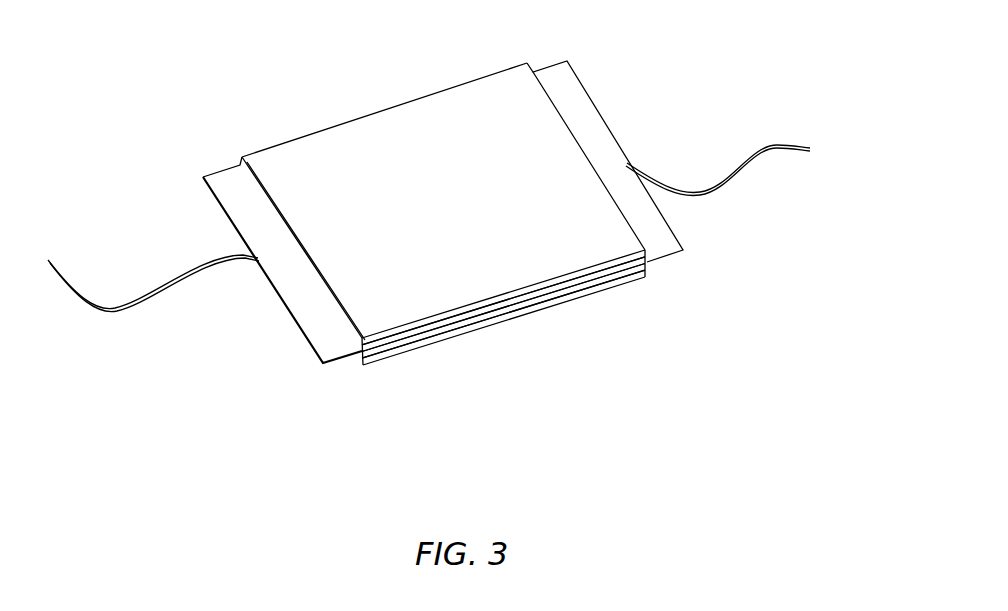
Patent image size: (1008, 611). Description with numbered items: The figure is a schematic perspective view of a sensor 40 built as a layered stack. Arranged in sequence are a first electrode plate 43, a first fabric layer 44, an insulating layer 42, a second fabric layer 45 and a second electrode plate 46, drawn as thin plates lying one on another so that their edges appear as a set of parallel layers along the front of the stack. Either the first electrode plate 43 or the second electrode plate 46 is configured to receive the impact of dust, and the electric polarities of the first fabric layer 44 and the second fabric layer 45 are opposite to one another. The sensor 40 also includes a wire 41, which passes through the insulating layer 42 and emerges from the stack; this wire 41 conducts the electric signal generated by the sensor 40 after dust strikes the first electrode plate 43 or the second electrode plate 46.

The sensor 40 is at (785, 133).
The wire 41 is at (167, 290).
The insulating layer 42 is at (318, 307).
The first electrode plate 43 is at (408, 347).
The first fabric layer 44 is at (485, 320).
The second fabric layer 45 is at (558, 300).
The second electrode plate 46 is at (627, 287).